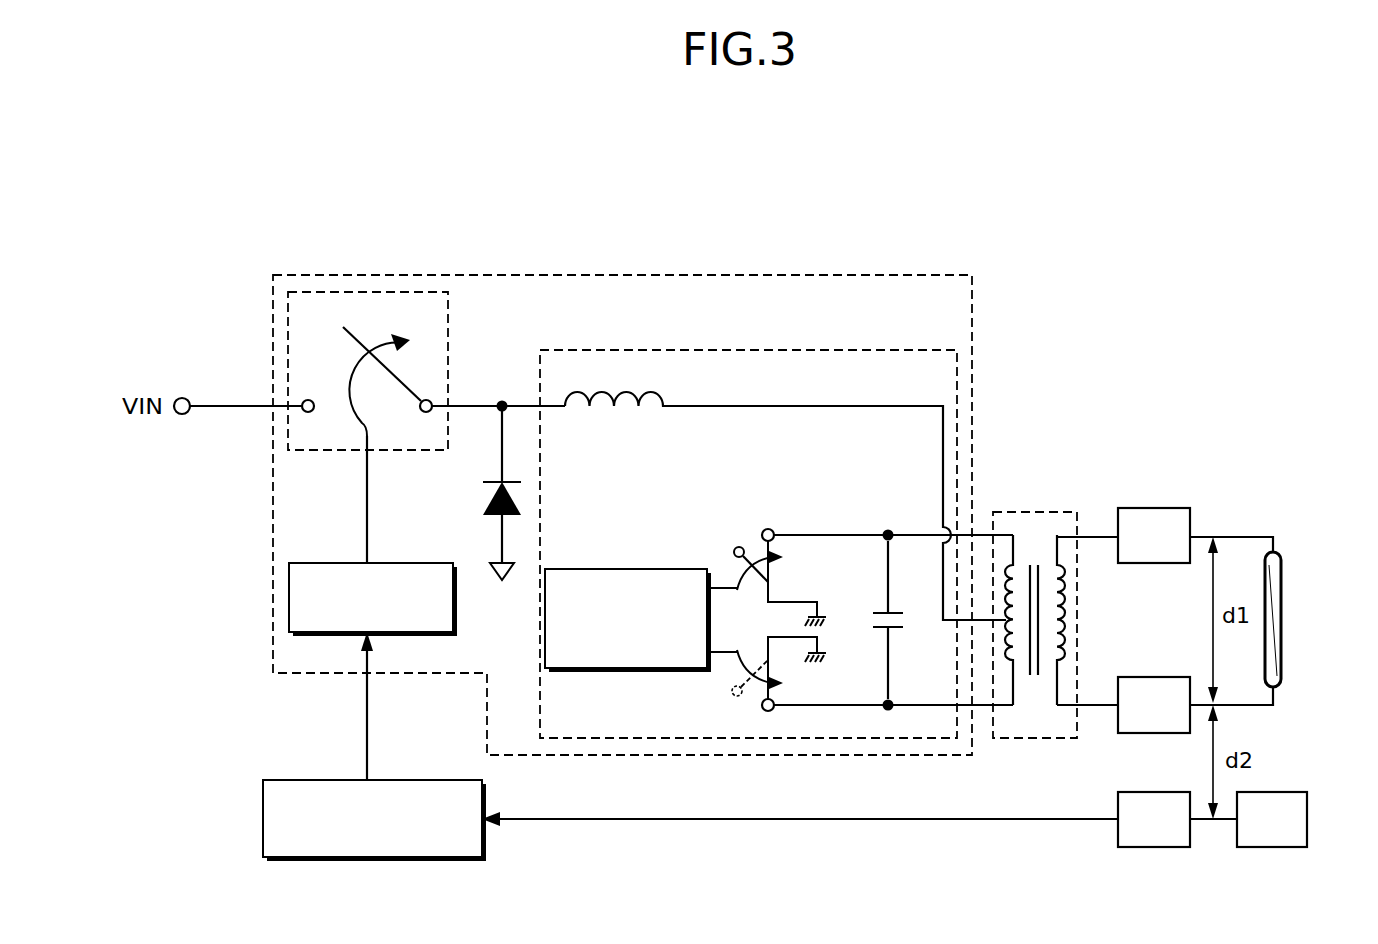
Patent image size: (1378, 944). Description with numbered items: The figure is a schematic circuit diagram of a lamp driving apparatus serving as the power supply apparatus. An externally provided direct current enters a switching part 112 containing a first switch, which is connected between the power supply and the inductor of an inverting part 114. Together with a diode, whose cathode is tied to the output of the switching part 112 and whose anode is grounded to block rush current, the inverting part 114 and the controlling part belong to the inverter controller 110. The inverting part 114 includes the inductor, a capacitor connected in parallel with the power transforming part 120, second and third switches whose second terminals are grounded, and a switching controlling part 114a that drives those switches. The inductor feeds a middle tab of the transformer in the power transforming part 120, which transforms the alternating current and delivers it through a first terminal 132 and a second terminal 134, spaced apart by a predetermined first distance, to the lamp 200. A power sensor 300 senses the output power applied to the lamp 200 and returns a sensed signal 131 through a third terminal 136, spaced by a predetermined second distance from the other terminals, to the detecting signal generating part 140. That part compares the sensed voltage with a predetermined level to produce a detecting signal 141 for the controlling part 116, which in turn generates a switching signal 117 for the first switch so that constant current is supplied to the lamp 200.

The inverter controller 110 is at (890, 275).
The switching part 112 is at (450, 312).
The inverting part 114 is at (851, 350).
The switching controlling part 114a is at (693, 568).
The controlling part 116 is at (373, 563).
The switching signal 117 is at (365, 499).
The power transforming part 120 is at (1050, 512).
The sensed signal 131 is at (846, 822).
The first terminal 132 is at (1155, 565).
The second terminal 134 is at (1155, 677).
The third terminal 136 is at (1152, 792).
The detecting signal generating part 140 is at (417, 780).
The detecting signal 141 is at (367, 707).
The lamp 200 is at (1278, 553).
The power sensor 300 is at (1289, 792).